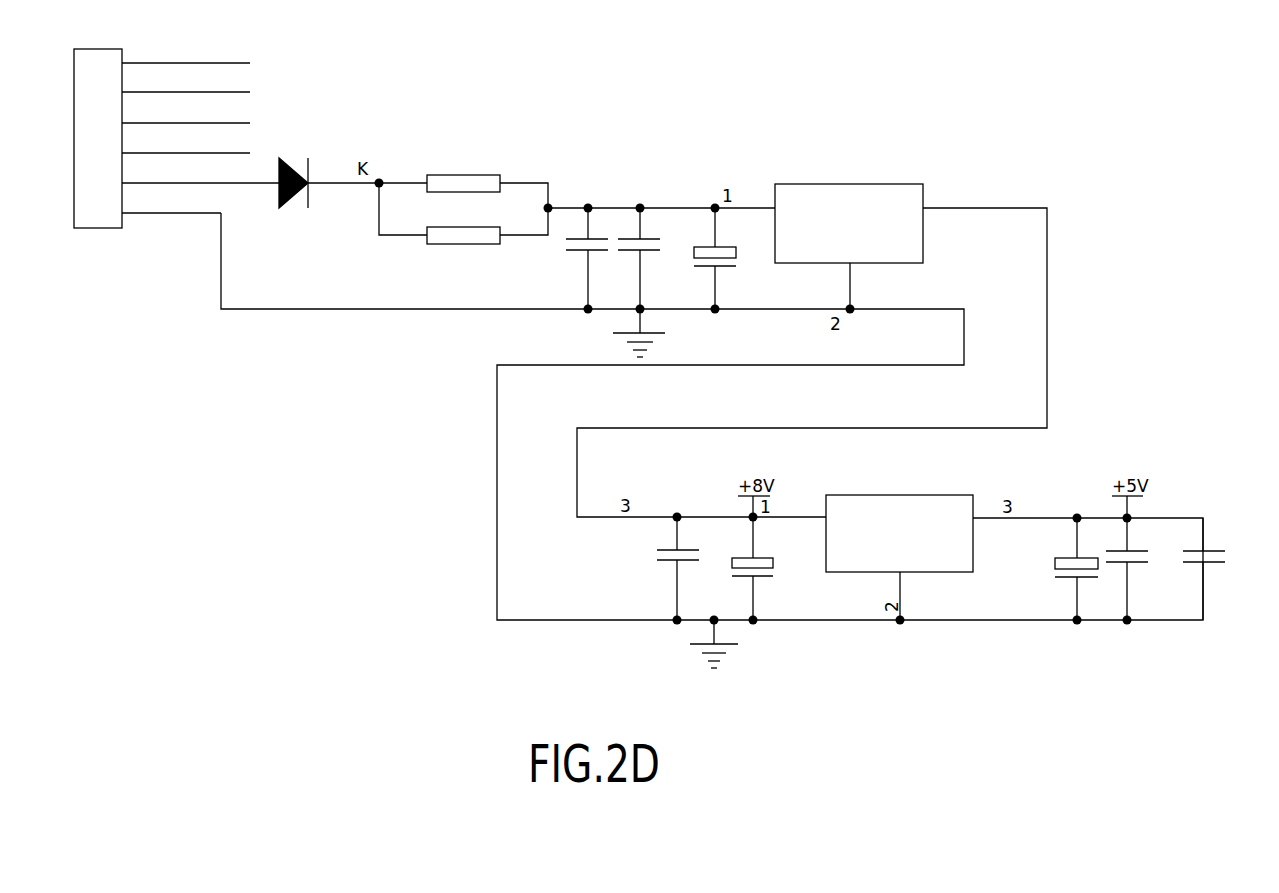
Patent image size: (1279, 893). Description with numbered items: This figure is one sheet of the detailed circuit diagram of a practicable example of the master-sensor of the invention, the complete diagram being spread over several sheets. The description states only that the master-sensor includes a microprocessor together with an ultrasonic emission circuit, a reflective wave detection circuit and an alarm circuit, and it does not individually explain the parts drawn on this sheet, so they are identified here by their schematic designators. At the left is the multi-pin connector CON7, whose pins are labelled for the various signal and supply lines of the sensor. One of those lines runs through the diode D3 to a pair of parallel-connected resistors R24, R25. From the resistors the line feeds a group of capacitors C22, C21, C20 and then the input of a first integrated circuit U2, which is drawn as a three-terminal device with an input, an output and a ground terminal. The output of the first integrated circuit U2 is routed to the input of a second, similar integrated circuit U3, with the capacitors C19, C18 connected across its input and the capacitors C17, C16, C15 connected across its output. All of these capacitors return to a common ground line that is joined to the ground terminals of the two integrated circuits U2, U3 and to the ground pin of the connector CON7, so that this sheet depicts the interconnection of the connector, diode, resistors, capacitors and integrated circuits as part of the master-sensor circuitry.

The connector CON7 is at (176, 127).
The diode IN4104 D3 is at (303, 208).
The resistor 10 ohm R24 is at (463, 181).
The resistor 10 ohm R25 is at (463, 213).
The capacitor 104 C22 is at (582, 258).
The capacitor 470K C21 is at (653, 258).
The electrolytic capacitor 47uF/35V C20 is at (738, 258).
The voltage regulator 7808 U2 is at (849, 201).
The voltage regulator 7805 U3 is at (899, 513).
The capacitor 104 C19 is at (659, 568).
The electrolytic capacitor 100uF/10V C18 is at (790, 568).
The electrolytic capacitor 100uF/10V C17 is at (1041, 569).
The capacitor 104 C16 is at (1138, 569).
The capacitor 104 C15 is at (1217, 569).